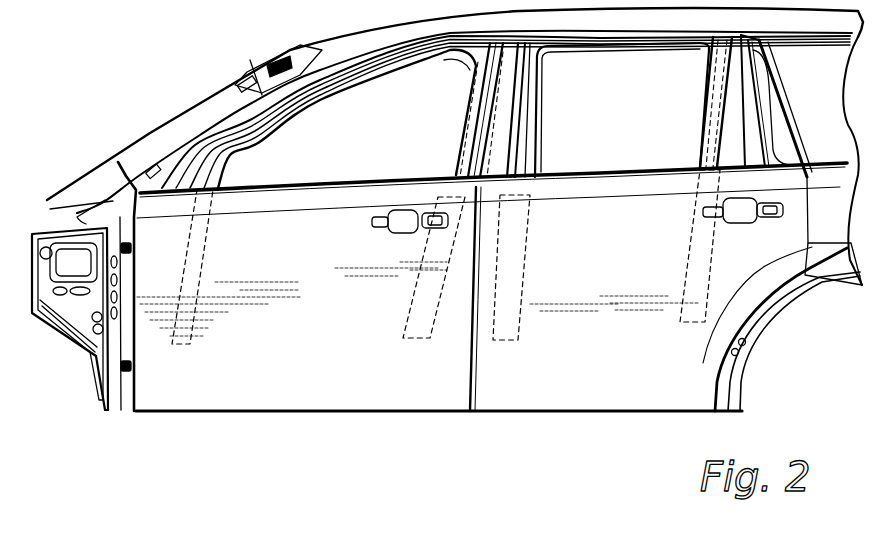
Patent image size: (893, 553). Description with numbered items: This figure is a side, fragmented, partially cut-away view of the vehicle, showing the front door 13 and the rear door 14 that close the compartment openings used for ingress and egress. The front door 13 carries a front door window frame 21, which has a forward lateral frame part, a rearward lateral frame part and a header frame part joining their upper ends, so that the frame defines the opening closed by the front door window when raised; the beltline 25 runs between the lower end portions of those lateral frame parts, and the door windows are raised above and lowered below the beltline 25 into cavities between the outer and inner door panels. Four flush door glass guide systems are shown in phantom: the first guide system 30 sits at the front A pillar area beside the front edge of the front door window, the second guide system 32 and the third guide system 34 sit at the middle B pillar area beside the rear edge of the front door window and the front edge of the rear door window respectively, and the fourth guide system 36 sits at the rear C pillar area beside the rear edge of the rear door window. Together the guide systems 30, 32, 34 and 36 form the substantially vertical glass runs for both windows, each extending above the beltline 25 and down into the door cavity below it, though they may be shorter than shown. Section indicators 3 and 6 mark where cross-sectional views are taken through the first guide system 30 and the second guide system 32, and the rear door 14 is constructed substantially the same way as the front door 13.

The section line 3- 3 is at (230, 226).
The section line 6- 6 is at (470, 232).
The front door 13 is at (348, 329).
The rear door 14 is at (628, 281).
The front door window frame 21 is at (447, 64).
The beltline 25 is at (318, 184).
The first flush door glass guide system 30 is at (200, 275).
The second flush door glass guide system 32 is at (410, 307).
The third flush door glass guide system 34 is at (530, 228).
The fourth flush door glass guide system 36 is at (692, 213).